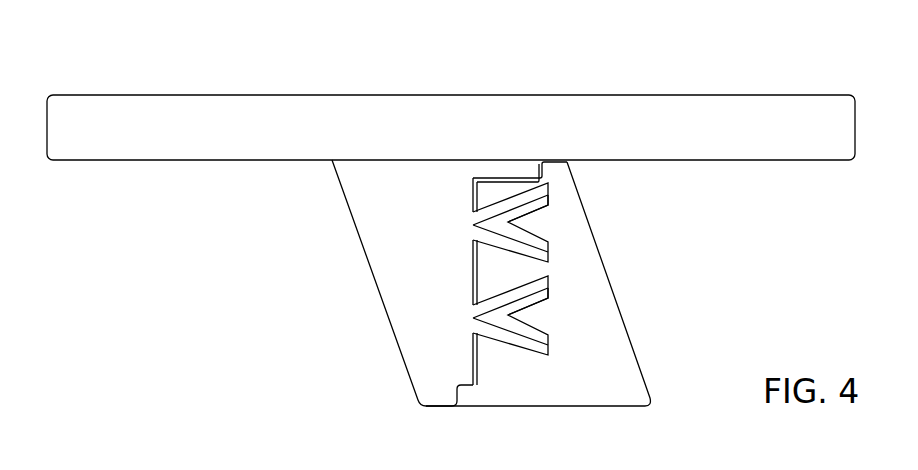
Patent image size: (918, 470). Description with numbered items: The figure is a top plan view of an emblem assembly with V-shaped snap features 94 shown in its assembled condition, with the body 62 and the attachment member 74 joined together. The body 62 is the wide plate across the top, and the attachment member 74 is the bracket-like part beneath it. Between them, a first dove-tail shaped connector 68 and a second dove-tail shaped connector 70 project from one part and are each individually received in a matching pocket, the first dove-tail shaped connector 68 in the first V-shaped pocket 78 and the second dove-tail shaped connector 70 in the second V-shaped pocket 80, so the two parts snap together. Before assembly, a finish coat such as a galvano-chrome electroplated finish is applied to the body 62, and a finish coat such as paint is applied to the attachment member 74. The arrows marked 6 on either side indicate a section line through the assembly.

The body 62 is at (768, 105).
The emblem assembly with V-shaped snap features 94 is at (618, 72).
The attachment member 74 is at (630, 390).
The first dove-tail shaped connector 68 is at (548, 184).
The first V-shaped pocket 78 is at (548, 205).
The second dove-tail shaped connector 70 is at (548, 298).
The second V-shaped pocket 80 is at (548, 335).
The section line 6- 6 is at (238, 262).